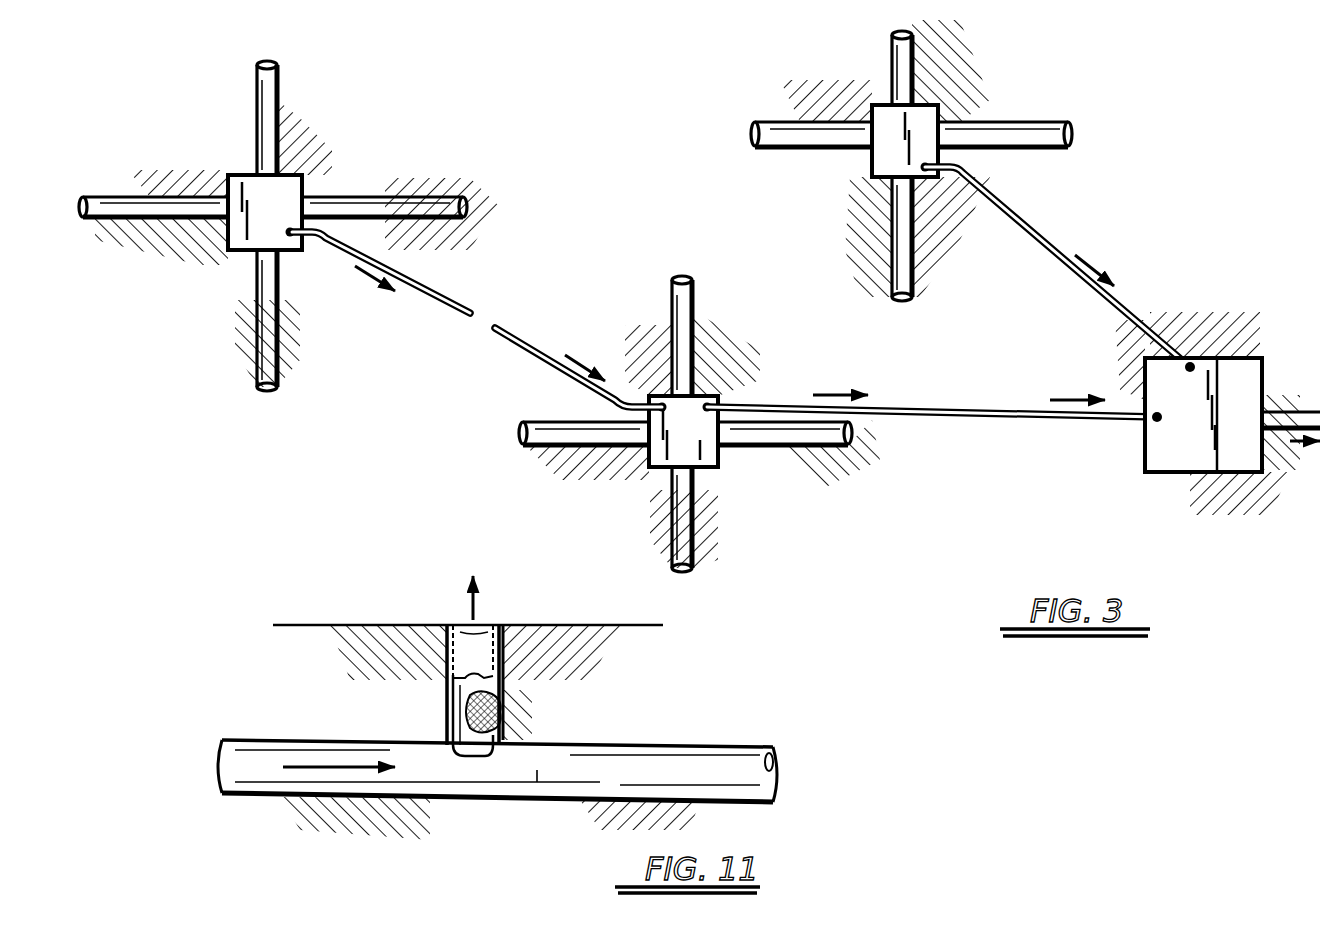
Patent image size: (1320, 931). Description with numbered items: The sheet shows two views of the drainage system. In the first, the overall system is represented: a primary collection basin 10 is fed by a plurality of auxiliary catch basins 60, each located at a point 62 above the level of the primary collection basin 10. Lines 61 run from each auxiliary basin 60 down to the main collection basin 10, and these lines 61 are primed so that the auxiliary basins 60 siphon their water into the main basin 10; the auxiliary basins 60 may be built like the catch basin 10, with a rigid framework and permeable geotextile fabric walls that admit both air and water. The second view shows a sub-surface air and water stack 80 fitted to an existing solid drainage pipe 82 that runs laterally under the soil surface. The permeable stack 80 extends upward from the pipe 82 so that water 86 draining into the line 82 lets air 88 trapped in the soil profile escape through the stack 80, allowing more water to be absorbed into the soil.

In FIG. 3, the primary collection basin 10 is at (1165, 443).
In FIG. 3, the auxiliary catch basin 60 is at (298, 192).
In FIG. 3, the line 61 is at (432, 292).
In FIG. 3, the point above the level of the primary collection basin 62 is at (206, 307).
In FIG. 11, the sub-surface air and water stack 80 is at (455, 700).
In FIG. 11, the solid drainage pipe 82 is at (536, 782).
In FIG. 11, the water 86 is at (500, 698).
In FIG. 11, the air 88 is at (468, 610).